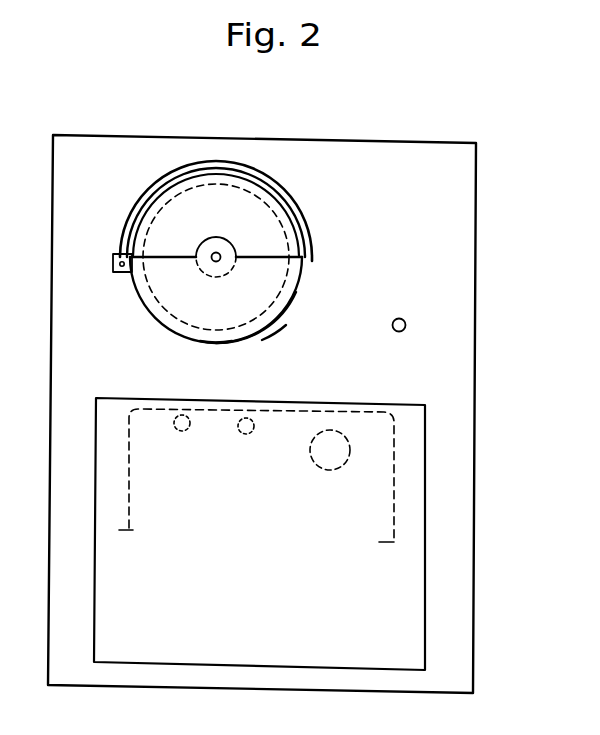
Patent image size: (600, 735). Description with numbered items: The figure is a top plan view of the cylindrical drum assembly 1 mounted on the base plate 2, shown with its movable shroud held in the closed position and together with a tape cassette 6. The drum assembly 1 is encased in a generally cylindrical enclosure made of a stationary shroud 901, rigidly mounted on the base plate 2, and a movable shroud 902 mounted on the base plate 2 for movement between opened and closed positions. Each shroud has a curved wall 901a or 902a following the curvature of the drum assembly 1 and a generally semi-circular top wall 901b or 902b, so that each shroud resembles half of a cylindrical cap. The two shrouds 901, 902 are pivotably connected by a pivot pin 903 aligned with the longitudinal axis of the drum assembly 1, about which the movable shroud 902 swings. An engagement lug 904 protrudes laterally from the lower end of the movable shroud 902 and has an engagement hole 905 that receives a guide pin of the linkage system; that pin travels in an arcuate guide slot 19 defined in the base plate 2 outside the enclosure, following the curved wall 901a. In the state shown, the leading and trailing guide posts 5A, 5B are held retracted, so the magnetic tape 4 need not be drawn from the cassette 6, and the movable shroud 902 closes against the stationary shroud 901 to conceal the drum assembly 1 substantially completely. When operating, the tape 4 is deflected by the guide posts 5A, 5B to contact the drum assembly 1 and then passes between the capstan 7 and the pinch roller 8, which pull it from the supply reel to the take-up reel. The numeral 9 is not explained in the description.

The cylindrical drum assembly 1 is at (198, 186).
The base plate 2 is at (473, 597).
The magnetic tape 4 is at (394, 471).
The leading guide post 5A is at (181, 432).
The trailing guide post 5B is at (246, 434).
The tape cassette 6 is at (425, 527).
The capstan 7 is at (405, 320).
The pinch roller 8 is at (342, 431).
The disk 9 is at (280, 208).
The arcuate guide slot 19 is at (271, 184).
The stationary shroud 901 is at (226, 177).
The curved wall of stationary shroud 901a is at (157, 192).
The semi-circular top wall of stationary shroud 901b is at (163, 228).
The movable shroud 902 is at (292, 298).
The curved wall of movable shroud 902a is at (273, 320).
The semi-circular top wall of movable shroud 902b is at (240, 313).
The pivot pin 903 is at (221, 250).
The engagement lug 904 is at (113, 273).
The engagement hole 905 is at (122, 256).